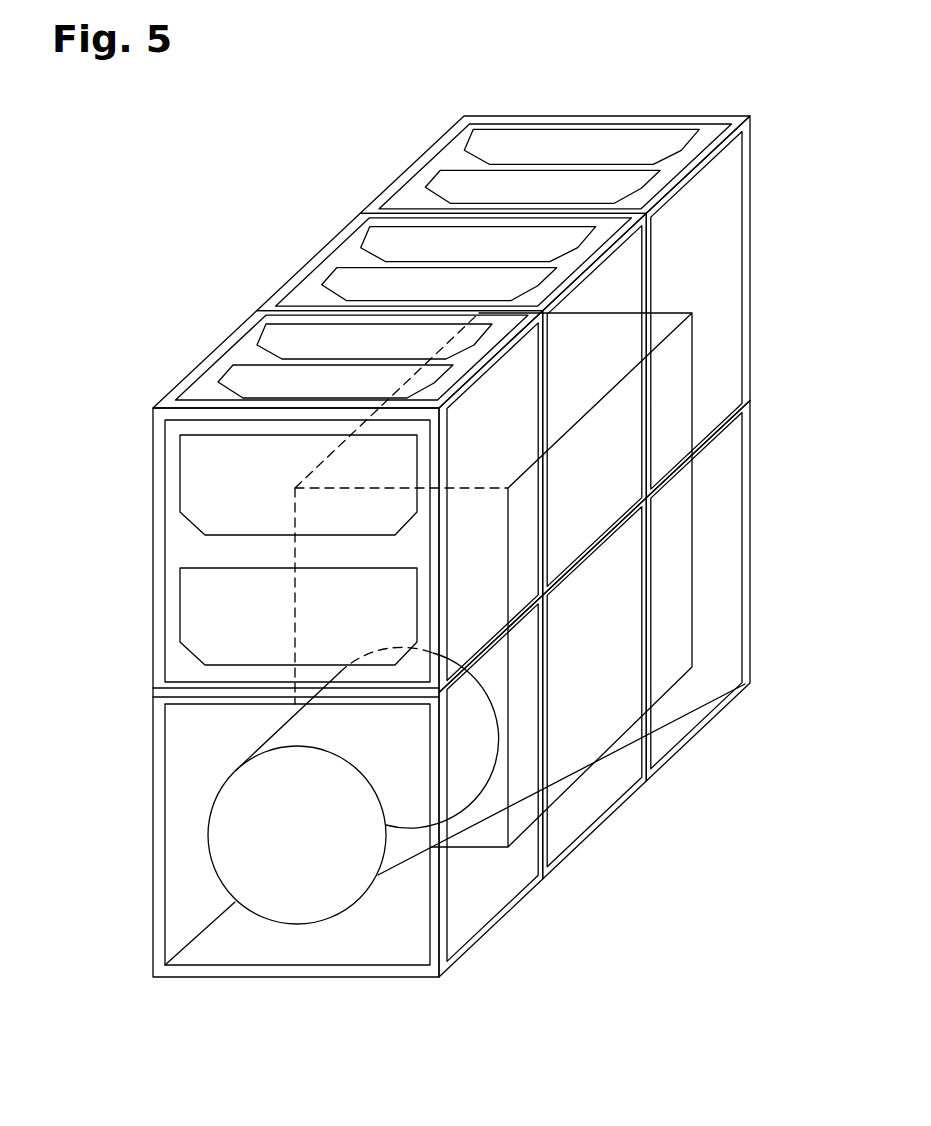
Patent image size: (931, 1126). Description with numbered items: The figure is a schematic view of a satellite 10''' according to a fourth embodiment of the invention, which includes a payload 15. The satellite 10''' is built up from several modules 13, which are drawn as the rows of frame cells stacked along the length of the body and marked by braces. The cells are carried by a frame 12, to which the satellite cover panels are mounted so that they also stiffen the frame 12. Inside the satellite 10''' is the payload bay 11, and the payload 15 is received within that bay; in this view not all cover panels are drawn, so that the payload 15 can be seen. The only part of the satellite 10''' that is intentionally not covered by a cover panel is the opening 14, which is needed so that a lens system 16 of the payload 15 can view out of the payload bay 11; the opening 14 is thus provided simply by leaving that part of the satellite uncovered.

The satellite 10''' is at (452, 591).
The payload bay 11 is at (508, 865).
The frame 12 is at (160, 609).
The modules 13 is at (358, 207).
The opening 14 is at (246, 911).
The payload 15 is at (580, 712).
The lens system 16 is at (305, 855).